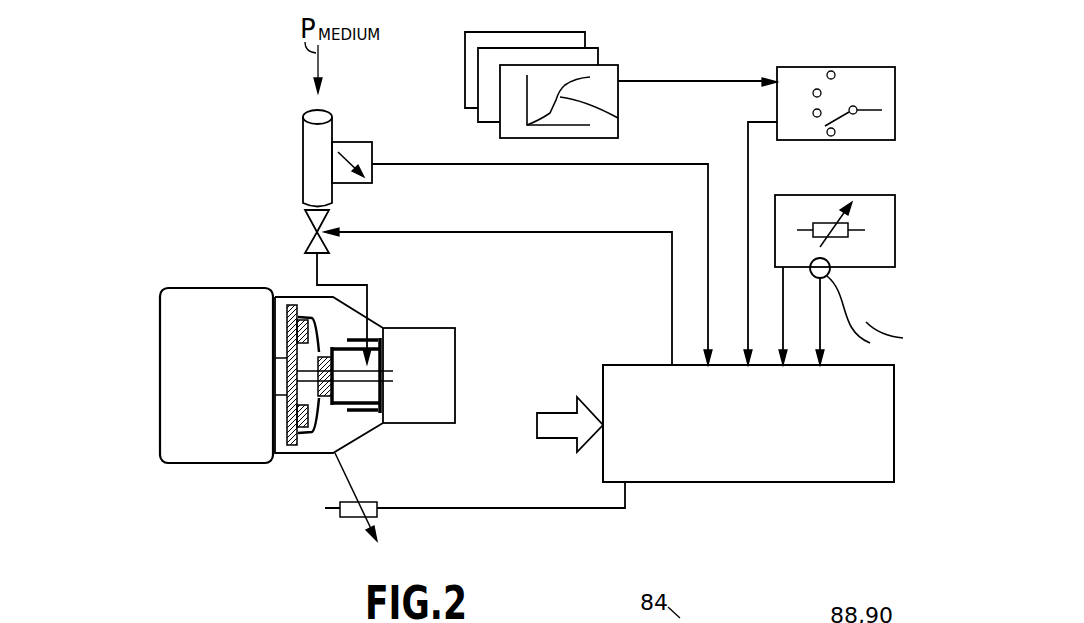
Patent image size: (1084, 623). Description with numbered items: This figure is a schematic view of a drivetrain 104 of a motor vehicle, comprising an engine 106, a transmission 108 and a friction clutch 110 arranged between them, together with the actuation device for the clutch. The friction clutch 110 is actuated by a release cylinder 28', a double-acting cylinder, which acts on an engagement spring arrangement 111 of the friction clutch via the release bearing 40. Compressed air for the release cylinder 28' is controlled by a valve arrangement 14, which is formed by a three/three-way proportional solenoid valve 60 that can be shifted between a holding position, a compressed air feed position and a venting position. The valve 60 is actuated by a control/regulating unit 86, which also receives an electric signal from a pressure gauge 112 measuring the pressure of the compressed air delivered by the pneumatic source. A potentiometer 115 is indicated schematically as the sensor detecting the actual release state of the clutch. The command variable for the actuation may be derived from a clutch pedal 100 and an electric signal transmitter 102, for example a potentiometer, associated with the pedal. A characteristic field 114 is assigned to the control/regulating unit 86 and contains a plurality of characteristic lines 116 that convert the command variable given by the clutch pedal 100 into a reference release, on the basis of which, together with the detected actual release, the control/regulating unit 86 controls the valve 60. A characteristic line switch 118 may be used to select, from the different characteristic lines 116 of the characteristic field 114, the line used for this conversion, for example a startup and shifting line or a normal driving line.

The valve arrangement 14 is at (323, 223).
The 3/3-way proportional solenoid valve 60 is at (320, 250).
The pressure gauge 112 is at (352, 142).
The drivetrain 104 is at (184, 274).
The engine 106 is at (172, 462).
The transmission 108 is at (440, 328).
The friction clutch 110 is at (292, 308).
The engagement spring arrangement 111 is at (323, 357).
The release cylinder 28' is at (365, 404).
The release bearing 40 is at (324, 400).
The potentiometer 115 is at (343, 518).
The characteristic field 114 is at (567, 48).
The characteristic lines 116 is at (618, 118).
The characteristic line switch 118 is at (870, 67).
The electric signal transmitter 102 is at (852, 225).
The clutch pedal 100 is at (845, 296).
The control/regulating unit 86 is at (800, 478).